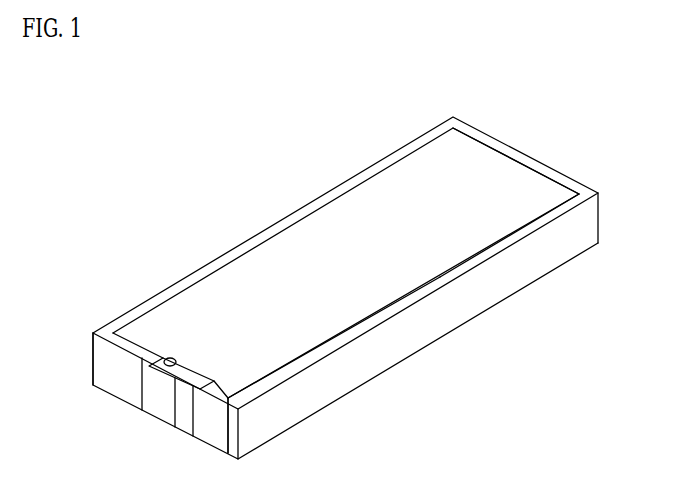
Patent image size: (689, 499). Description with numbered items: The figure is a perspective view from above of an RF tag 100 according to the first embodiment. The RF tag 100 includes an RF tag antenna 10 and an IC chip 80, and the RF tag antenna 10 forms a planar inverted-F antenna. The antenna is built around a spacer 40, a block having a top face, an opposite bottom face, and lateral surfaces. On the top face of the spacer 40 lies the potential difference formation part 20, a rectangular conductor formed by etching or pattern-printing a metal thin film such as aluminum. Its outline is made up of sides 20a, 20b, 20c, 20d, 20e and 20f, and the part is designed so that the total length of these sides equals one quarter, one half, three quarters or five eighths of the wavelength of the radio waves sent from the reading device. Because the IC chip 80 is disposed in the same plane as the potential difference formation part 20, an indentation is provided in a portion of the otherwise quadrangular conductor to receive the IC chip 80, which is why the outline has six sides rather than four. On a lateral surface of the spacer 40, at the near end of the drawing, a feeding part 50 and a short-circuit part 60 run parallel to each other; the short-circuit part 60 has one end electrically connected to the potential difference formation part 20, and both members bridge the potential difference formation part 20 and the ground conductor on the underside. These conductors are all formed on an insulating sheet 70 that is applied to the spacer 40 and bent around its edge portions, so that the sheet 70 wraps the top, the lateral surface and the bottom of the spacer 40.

The RF tag 100 is at (221, 245).
The RF tag antenna 10 is at (527, 181).
The potential difference formation part 20 is at (305, 250).
The side of potential difference formation part 20a is at (165, 357).
The side of potential difference formation part 20b is at (240, 258).
The side of potential difference formation part 20c is at (503, 157).
The side of potential difference formation part 20d is at (440, 273).
The side of potential difference formation part 20e is at (250, 385).
The side of potential difference formation part 20f is at (214, 382).
The spacer 40 is at (443, 308).
The feeding part 50 is at (162, 400).
The short-circuit part 60 is at (217, 427).
The sheet 70 is at (362, 183).
The IC chip 80 is at (97, 333).